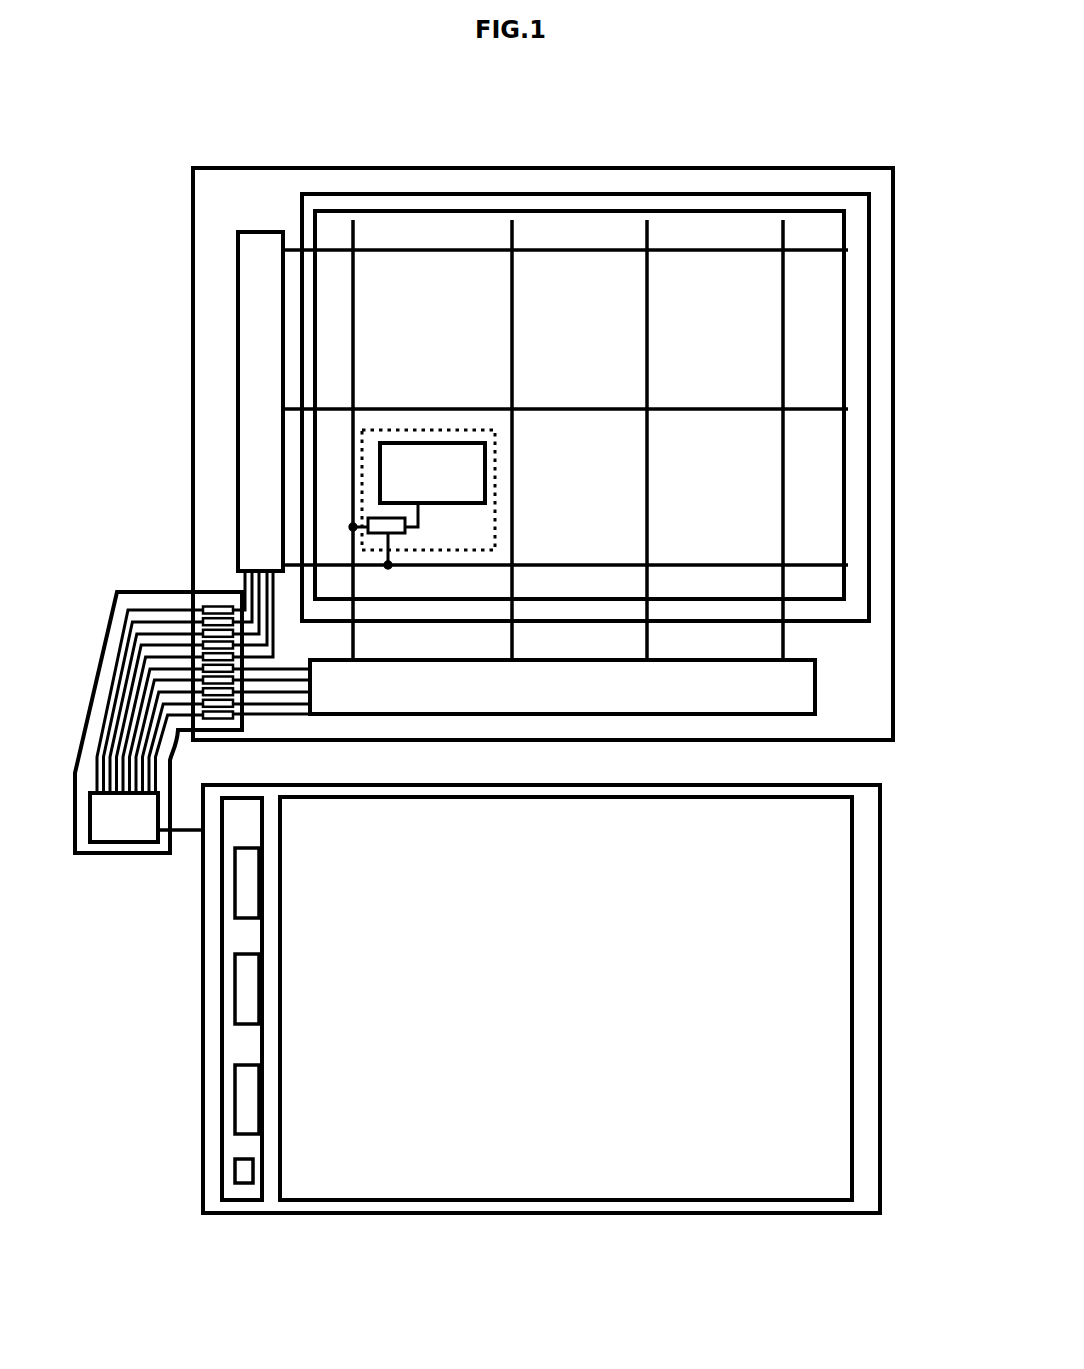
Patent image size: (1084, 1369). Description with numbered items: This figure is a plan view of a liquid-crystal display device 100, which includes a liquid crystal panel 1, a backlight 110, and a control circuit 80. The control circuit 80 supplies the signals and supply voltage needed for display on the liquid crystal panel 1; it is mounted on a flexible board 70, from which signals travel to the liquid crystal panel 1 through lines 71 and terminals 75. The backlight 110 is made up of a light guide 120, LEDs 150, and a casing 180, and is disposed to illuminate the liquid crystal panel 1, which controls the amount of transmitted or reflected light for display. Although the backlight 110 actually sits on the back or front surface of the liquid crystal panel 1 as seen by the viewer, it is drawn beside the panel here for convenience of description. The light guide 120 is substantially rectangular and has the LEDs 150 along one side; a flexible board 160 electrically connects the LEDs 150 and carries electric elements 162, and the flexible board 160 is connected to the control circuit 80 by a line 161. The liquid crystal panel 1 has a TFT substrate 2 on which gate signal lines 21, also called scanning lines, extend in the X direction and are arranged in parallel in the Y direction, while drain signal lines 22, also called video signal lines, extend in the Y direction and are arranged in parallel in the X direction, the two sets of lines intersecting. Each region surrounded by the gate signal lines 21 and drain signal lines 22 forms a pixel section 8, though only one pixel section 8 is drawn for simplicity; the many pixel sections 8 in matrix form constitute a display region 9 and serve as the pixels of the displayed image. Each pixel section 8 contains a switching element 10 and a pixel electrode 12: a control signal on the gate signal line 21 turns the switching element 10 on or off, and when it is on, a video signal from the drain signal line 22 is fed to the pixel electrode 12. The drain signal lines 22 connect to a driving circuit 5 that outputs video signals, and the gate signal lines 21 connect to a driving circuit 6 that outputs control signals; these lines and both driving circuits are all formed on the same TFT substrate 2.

The liquid crystal panel 1 is at (565, 163).
The TFT substrate 2 is at (315, 178).
The driving circuit 5 is at (816, 683).
The driving circuit 6 is at (250, 245).
The pixel section 8 is at (497, 455).
The display region 9 is at (697, 223).
The switching element 10 is at (408, 535).
The pixel electrode 12 is at (443, 473).
The gate signal line 21 is at (567, 408).
The drain signal line 22 is at (356, 337).
The flexible board 70 is at (150, 598).
The lines 71 is at (123, 607).
The terminals 75 is at (218, 607).
The control circuit 80 is at (115, 830).
The liquid-crystal display device 100 is at (497, 1242).
The backlight 110 is at (683, 1205).
The light guide 120 is at (802, 1180).
The LEDs 150 is at (247, 1097).
The flexible board 160 is at (222, 1008).
The line 161 is at (188, 833).
The electric elements 162 is at (247, 1172).
The casing 180 is at (352, 1217).